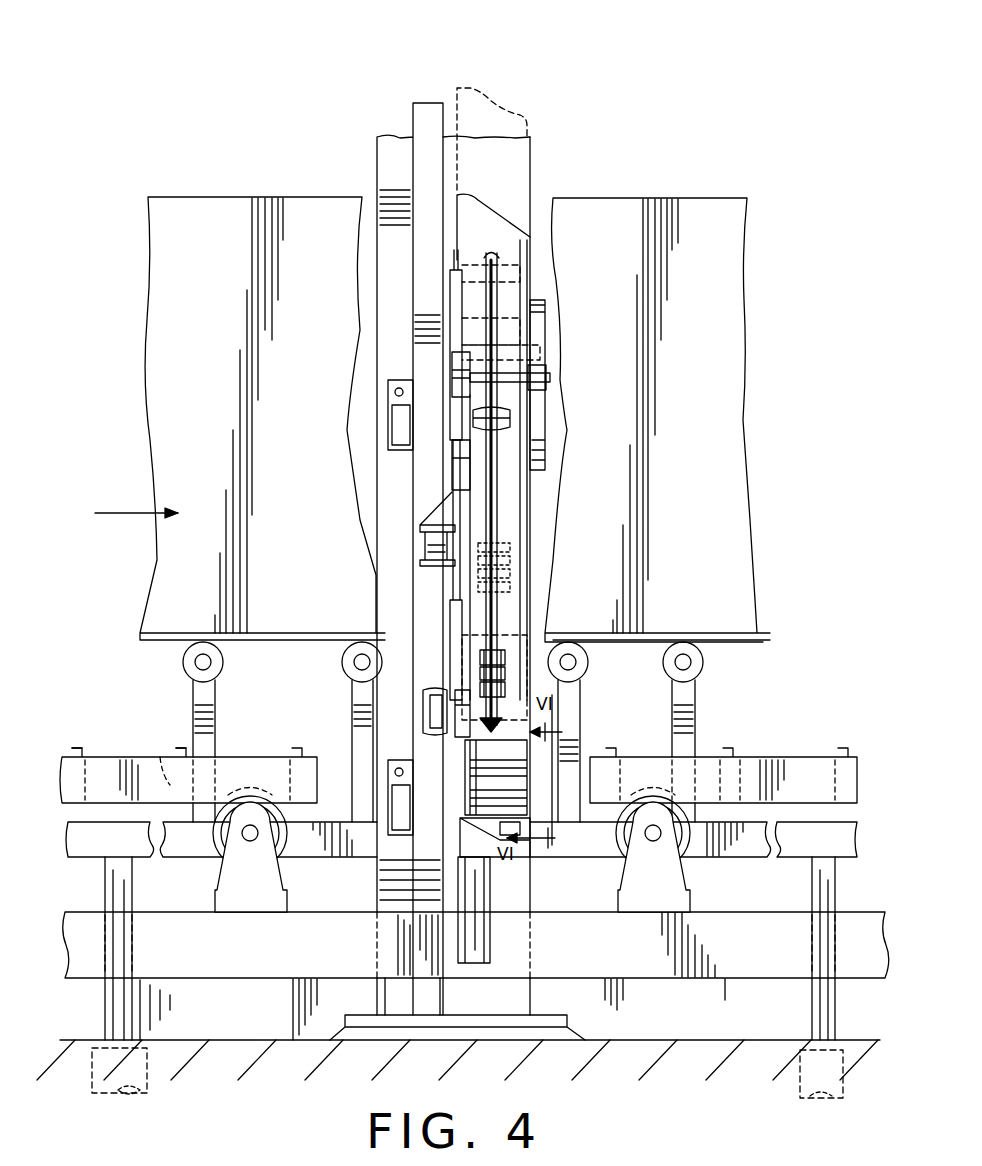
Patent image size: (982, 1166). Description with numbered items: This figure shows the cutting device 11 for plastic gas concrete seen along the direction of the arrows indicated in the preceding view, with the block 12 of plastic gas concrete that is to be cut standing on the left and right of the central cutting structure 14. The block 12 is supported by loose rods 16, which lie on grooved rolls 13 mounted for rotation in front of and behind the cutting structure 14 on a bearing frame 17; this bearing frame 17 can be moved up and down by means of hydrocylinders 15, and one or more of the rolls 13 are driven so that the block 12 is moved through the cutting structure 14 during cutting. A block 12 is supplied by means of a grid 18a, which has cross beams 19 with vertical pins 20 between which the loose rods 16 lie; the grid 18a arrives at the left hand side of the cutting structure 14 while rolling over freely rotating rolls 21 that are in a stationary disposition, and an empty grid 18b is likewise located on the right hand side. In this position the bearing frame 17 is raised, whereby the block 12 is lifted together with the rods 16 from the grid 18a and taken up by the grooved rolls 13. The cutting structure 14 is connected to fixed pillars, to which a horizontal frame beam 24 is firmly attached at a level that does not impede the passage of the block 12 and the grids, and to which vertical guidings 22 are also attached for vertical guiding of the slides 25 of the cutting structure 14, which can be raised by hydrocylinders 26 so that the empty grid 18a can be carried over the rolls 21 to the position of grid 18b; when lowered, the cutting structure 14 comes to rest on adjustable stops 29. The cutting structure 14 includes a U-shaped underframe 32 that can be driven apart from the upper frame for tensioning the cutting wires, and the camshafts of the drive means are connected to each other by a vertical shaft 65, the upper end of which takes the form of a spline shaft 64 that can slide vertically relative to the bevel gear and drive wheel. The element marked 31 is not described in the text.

The device 11 is at (680, 178).
The block 12 is at (240, 215).
The grooved rolls 13 is at (610, 665).
The cutting structure 14 is at (511, 40).
The hydrocylinders 15 is at (147, 1098).
The rods 16 is at (764, 660).
The bearing frame 17 is at (742, 855).
The grid 18a is at (140, 757).
The empty grid 18b is at (792, 757).
The cross beams 19 is at (160, 757).
The vertical pins 20 is at (76, 748).
The freely rotating rolls 21 is at (290, 868).
The vertical guidings 22 is at (450, 296).
The horizontal frame beam 24 is at (418, 745).
The slides 25 is at (452, 370).
The hydrocylinders 26 is at (490, 945).
The adjustable stops 29 is at (425, 540).
The bracket plate 31 is at (490, 190).
The U-shaped underframe 32 is at (530, 781).
The spline shaft 64 is at (498, 492).
The vertical shaft 65 is at (500, 606).